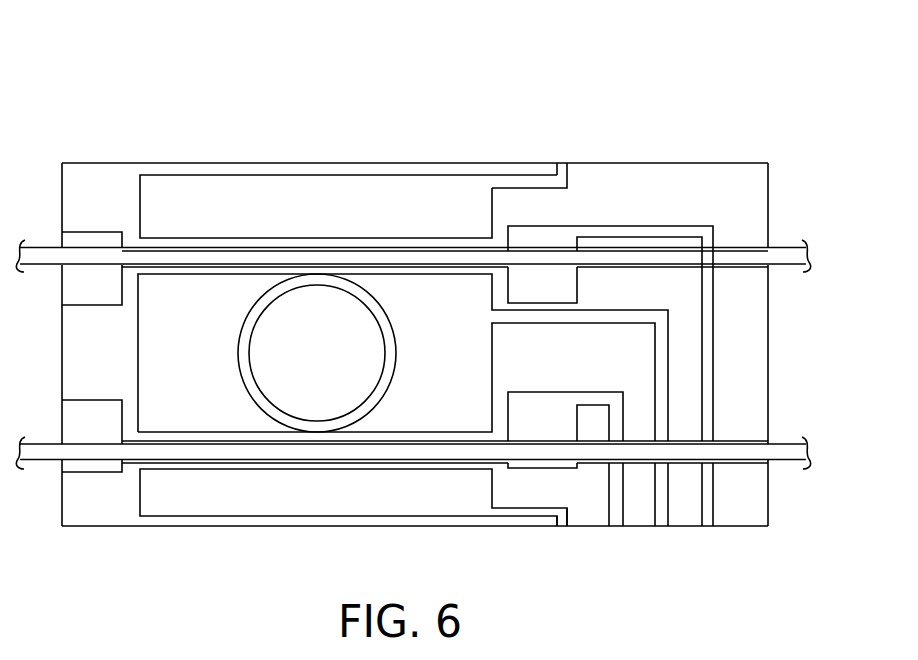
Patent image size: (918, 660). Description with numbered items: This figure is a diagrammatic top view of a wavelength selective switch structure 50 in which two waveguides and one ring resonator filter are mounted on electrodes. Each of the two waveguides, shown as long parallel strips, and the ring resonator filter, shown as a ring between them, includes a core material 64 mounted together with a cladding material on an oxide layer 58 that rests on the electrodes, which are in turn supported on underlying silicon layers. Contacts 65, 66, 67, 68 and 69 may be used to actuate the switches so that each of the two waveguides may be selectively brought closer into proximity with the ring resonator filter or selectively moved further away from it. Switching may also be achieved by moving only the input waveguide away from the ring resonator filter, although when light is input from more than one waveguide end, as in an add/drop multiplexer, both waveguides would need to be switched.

The wavelength selective switch structure 50 is at (634, 48).
The oxide layer 58 is at (313, 224).
The core material 64 is at (245, 352).
The contact 65 is at (562, 527).
The contact 66 is at (619, 527).
The contact 67 is at (663, 527).
The contact 68 is at (707, 527).
The contact 69 is at (561, 172).